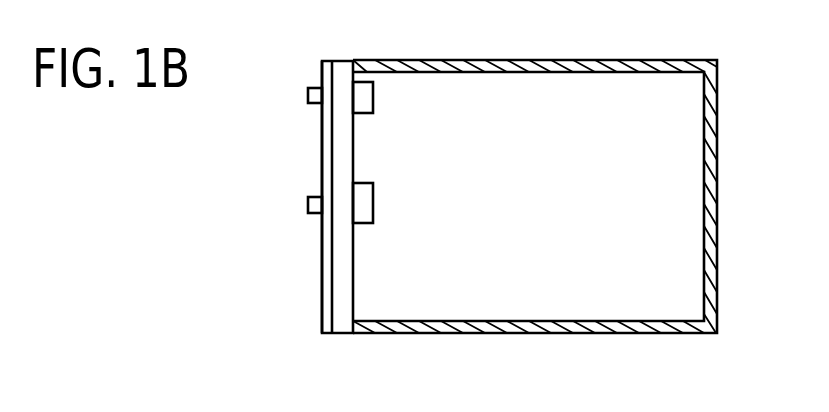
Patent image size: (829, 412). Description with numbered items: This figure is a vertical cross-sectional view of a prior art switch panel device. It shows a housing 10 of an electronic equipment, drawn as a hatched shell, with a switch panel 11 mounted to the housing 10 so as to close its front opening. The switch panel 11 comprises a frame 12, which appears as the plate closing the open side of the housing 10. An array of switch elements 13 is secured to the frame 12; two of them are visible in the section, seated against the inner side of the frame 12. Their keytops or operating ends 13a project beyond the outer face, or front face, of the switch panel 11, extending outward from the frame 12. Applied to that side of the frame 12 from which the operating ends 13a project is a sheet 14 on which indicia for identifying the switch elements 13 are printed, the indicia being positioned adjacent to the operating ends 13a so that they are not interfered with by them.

The housing 10 is at (678, 60).
The switch panel 11 is at (338, 333).
The frame 12 is at (343, 72).
The switch elements 13 is at (375, 200).
The operating ends 13a is at (308, 101).
The sheet 14 is at (322, 285).